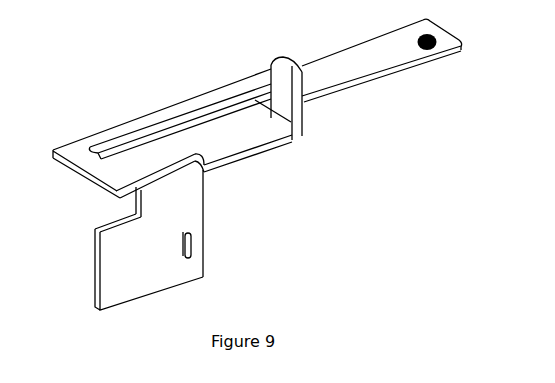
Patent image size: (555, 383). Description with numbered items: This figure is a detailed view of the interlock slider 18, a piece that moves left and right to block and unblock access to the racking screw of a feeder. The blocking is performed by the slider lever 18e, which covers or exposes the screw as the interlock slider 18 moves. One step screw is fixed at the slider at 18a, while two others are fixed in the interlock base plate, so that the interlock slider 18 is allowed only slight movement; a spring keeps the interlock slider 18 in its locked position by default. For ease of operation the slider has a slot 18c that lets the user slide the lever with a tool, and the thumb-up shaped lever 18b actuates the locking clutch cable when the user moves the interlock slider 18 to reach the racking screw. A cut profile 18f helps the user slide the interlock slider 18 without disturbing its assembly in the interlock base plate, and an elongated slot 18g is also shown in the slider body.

The interlock slider 18 is at (85, 80).
The step screw location on interlock slider 18a is at (443, 52).
The thumb-up shaped lever 18b is at (307, 100).
The slot 18c is at (205, 266).
The slider lever 18e is at (139, 278).
The cut profile 18f is at (107, 227).
The elongated slot 18g is at (232, 97).